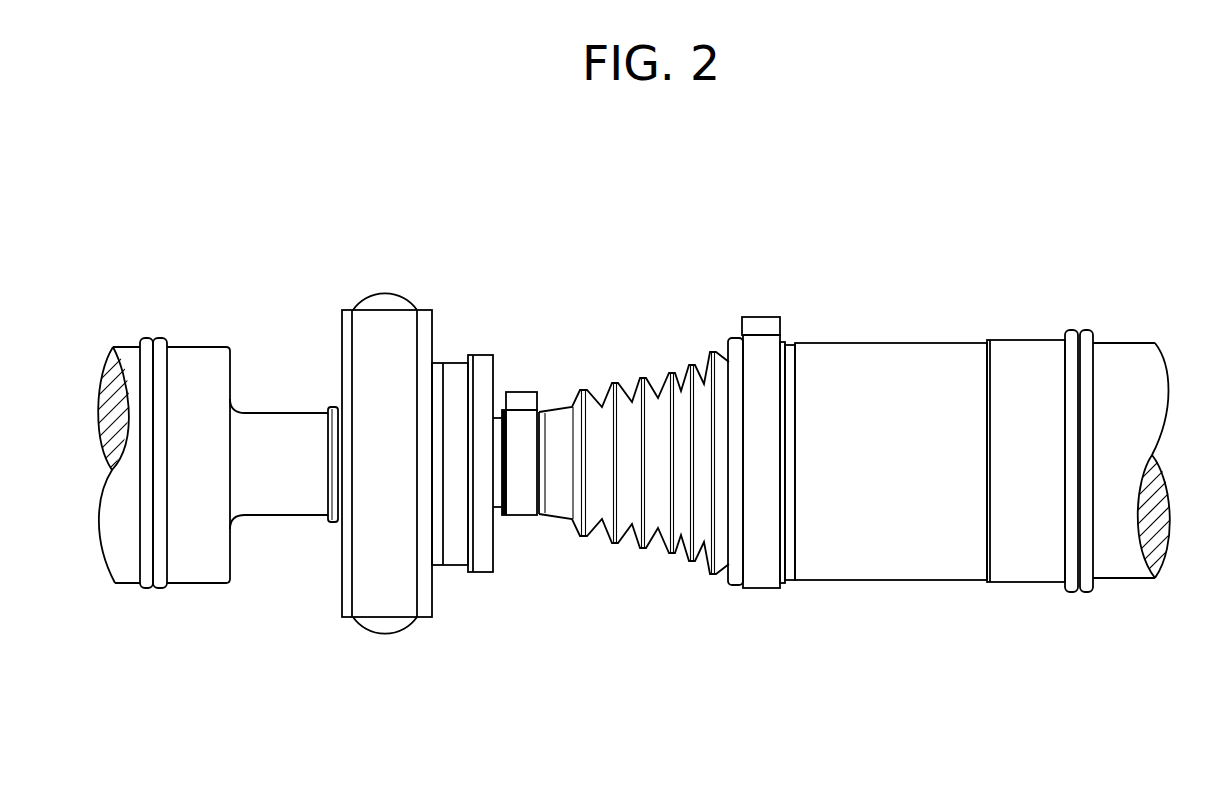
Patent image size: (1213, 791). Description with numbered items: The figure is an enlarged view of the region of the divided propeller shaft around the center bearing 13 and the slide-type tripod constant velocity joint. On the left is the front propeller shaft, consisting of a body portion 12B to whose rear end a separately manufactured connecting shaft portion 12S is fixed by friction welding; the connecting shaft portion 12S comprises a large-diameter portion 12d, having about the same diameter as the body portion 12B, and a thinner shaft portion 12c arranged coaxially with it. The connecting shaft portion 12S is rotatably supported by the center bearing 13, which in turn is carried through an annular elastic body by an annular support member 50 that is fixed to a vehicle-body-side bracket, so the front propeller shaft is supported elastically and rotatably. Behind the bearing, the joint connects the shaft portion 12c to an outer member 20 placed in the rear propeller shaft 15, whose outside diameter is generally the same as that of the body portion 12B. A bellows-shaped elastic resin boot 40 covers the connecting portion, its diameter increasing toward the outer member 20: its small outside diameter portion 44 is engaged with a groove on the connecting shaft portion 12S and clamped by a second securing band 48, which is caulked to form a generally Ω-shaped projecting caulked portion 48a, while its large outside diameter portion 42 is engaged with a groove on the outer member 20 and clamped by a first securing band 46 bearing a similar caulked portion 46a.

The center bearing 13 is at (417, 254).
The body portion 12B is at (120, 572).
The large-diameter portion 12d is at (200, 570).
The shaft portion 12c is at (270, 445).
The connecting shaft portion 12S is at (290, 503).
The annular support member 50 is at (388, 612).
The second securing band 48 is at (518, 502).
The caulked portion 48a is at (526, 398).
The boot 40 is at (642, 384).
The small outside diameter portion 44 is at (551, 551).
The first securing band 46 is at (760, 583).
The caulked portion 46a is at (762, 324).
The large outside diameter portion 42 is at (795, 606).
The outer member 20 is at (890, 362).
The rear propeller shaft 15 is at (1133, 362).